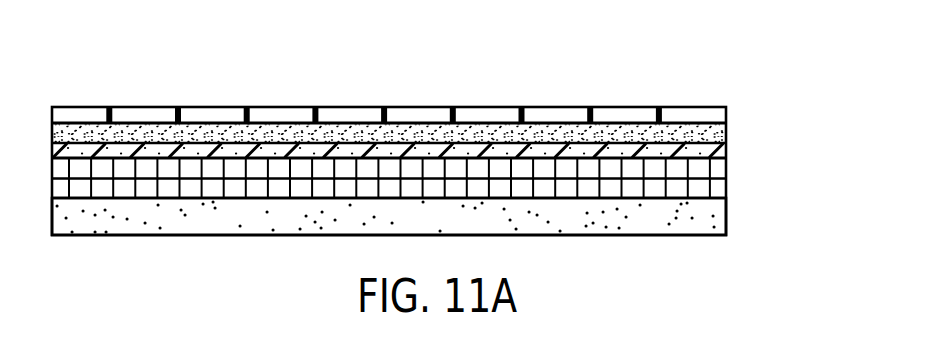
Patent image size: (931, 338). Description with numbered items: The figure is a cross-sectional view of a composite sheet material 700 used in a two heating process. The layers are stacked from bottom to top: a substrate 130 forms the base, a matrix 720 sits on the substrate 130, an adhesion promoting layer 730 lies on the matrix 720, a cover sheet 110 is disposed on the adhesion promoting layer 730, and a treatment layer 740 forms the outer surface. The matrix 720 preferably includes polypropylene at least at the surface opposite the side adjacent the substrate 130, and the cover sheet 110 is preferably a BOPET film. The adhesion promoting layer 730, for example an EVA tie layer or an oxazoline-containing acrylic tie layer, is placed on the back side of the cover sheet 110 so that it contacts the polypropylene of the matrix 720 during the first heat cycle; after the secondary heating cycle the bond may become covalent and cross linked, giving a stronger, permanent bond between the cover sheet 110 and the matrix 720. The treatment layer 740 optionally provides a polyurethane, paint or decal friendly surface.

The composite sheet material 700 is at (101, 70).
The treatment layer 740 is at (720, 112).
The cover sheet 110 is at (720, 132).
The adhesion promoting layer 730 is at (714, 152).
The matrix 720 is at (720, 187).
The substrate 130 is at (720, 228).